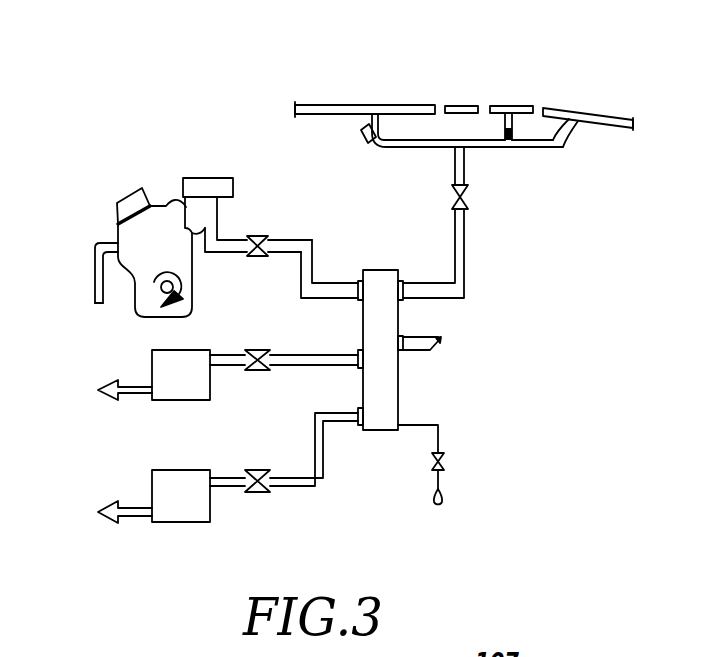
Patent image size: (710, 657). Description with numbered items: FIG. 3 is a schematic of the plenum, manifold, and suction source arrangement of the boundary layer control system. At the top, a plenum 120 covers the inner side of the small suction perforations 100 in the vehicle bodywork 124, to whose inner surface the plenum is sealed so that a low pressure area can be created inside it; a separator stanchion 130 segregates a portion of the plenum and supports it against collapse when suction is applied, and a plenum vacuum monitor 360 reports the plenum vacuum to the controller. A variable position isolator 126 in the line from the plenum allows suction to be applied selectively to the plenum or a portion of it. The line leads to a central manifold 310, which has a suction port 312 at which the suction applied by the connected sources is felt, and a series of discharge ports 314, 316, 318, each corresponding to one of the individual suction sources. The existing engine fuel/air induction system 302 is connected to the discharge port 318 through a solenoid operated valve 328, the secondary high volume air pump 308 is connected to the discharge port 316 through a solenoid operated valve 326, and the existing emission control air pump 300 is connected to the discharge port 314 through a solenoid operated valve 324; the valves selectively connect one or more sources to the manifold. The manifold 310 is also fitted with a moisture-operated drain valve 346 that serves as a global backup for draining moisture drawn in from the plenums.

The perforations 100 is at (489, 92).
The vehicle bodywork 124 is at (586, 111).
The plenum 120 is at (557, 148).
The separator stanchion 130 is at (512, 128).
The plenum vacuum monitor 360 is at (362, 142).
The variable position isolator 126 is at (468, 200).
The engine fuel/air induction system 302 is at (190, 204).
The solenoid operated valve 328 is at (253, 256).
The discharge port 318 is at (359, 301).
The central manifold 310 is at (387, 430).
The suction port 312 is at (401, 351).
The discharge port 316 is at (359, 369).
The solenoid operated valve 326 is at (252, 371).
The secondary high volume air pump 308 is at (180, 401).
The discharge port 314 is at (362, 430).
The solenoid operated valve 324 is at (252, 493).
The emission control air pump 300 is at (180, 523).
The moisture-operated drain valve 346 is at (446, 458).